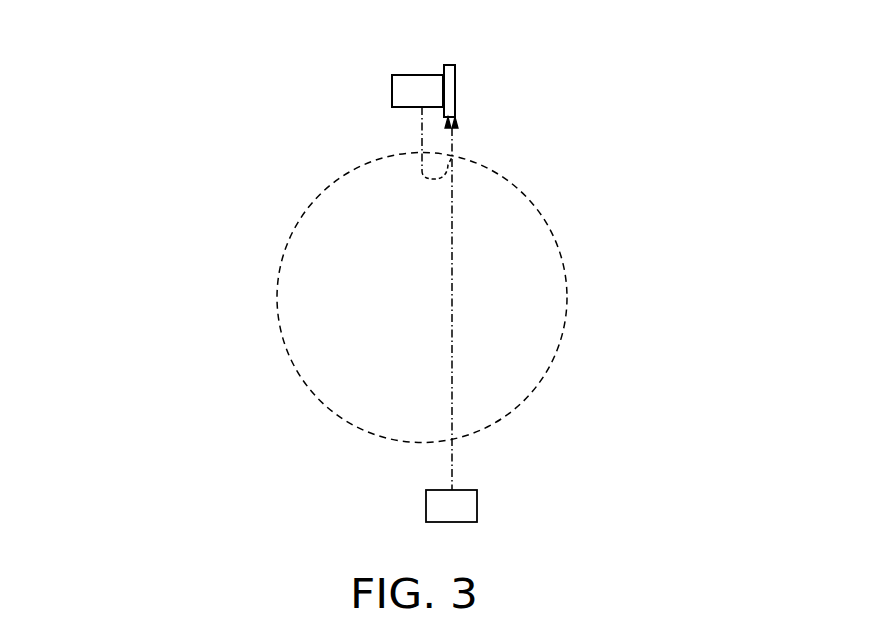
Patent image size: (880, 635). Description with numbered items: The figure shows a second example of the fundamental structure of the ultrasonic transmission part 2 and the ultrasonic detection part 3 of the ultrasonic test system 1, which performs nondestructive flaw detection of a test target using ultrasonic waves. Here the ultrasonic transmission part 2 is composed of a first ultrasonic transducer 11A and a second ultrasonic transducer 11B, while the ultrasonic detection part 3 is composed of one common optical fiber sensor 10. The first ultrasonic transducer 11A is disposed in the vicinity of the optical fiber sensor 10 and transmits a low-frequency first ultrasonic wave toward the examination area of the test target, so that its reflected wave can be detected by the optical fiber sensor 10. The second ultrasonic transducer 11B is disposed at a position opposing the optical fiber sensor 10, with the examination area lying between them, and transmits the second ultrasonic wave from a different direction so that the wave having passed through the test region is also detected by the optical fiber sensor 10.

The ultrasonic test system 1 is at (433, 65).
The ultrasonic transmission part 2 is at (399, 75).
The ultrasonic detection part 3 is at (456, 73).
The optical fiber sensor 10 is at (456, 102).
The first ultrasonic transducer 11A is at (392, 92).
The second ultrasonic transducer 11B is at (477, 507).